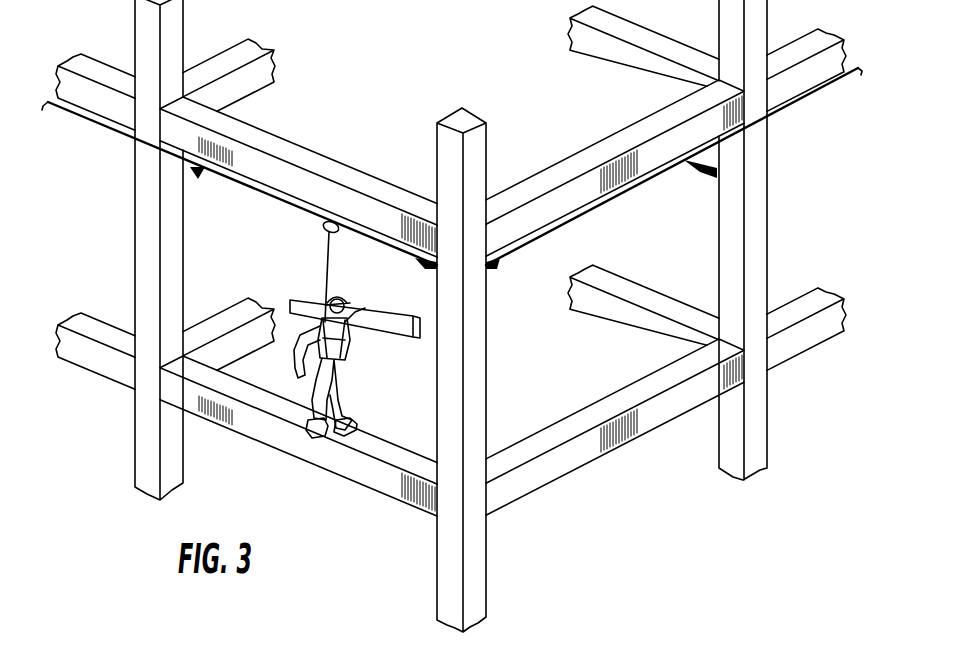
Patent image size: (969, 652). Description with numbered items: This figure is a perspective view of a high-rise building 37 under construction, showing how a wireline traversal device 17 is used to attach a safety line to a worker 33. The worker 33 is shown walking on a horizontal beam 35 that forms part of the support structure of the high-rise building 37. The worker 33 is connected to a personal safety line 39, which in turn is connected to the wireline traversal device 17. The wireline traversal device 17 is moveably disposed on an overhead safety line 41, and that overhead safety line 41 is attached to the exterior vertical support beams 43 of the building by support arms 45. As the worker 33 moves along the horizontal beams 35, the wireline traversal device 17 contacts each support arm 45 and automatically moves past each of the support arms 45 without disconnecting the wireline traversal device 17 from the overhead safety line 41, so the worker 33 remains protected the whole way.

The wireline traversal device 17 is at (323, 229).
The worker 33 is at (321, 432).
The beam 35 is at (223, 410).
The high-rise building 37 is at (700, 532).
The personal safety line 39 is at (324, 268).
The overhead safety line 41 is at (234, 183).
The exterior vertical support beams 43 is at (137, 245).
The support arms 45 is at (196, 181).